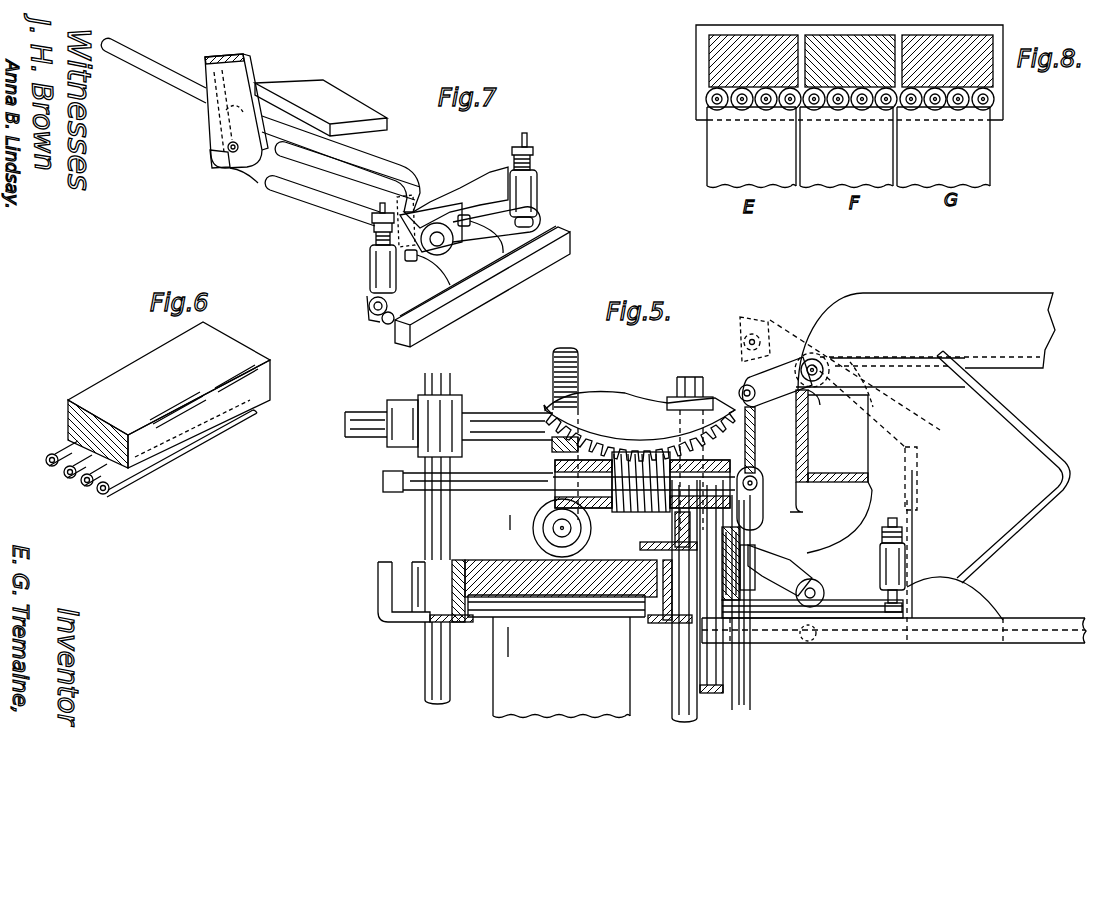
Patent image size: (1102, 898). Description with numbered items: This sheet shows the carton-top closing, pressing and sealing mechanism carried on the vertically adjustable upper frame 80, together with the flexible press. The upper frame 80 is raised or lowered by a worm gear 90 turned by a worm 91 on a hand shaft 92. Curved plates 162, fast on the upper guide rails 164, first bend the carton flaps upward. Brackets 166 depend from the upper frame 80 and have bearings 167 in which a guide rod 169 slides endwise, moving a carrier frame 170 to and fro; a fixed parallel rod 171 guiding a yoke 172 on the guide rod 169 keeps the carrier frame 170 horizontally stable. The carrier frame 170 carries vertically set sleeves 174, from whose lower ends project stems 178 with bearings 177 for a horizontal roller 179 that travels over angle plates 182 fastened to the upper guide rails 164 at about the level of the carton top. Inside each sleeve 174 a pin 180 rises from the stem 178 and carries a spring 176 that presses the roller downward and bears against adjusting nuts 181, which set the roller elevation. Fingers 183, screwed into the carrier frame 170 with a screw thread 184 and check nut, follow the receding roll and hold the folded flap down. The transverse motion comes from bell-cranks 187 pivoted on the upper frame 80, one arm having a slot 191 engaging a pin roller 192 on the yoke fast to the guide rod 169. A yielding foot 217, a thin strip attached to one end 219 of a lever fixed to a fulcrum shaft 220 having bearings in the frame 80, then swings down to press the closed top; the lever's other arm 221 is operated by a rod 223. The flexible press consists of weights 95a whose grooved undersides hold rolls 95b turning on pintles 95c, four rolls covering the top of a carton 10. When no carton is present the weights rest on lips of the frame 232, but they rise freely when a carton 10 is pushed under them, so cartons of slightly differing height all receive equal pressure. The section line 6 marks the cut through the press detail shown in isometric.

In FIG. 7, the bell-crank 187 is at (205, 80).
In FIG. 7, the bearings 167 is at (222, 128).
In FIG. 7, the slot 191 is at (230, 158).
In FIG. 7, the pin roller 192 is at (250, 172).
In FIG. 7, the yoke 172 is at (227, 165).
In FIG. 7, the bracket 166 is at (333, 98).
In FIG. 5, the bracket 166 is at (803, 558).
In FIG. 7, the fixed parallel rod 171 is at (290, 200).
In FIG. 7, the guide rod 169 is at (297, 195).
In FIG. 7, the carrier frame 170 is at (457, 200).
In FIG. 7, the sleeves 174 is at (528, 190).
In FIG. 5, the sleeves 174 is at (893, 567).
In FIG. 7, the screw thread 184 is at (468, 216).
In FIG. 7, the fingers 183 is at (537, 229).
In FIG. 7, the upper guide rails 164 is at (548, 260).
In FIG. 5, the upper guide rails 164 is at (894, 557).
In FIG. 7, the angle plates 182 is at (423, 300).
In FIG. 7, the stems 178 is at (367, 304).
In FIG. 5, the stems 178 is at (740, 590).
In FIG. 7, the bearings 177 is at (373, 330).
In FIG. 7, the roller 179 is at (383, 333).
In FIG. 5, the roller 179 is at (867, 608).
In FIG. 6, the weight 95a is at (169, 395).
In FIG. 8, the weight 95a is at (715, 63).
In FIG. 6, the rolls 95b is at (178, 453).
In FIG. 8, the rolls 95b is at (710, 100).
In FIG. 5, the rolls 95b is at (593, 617).
In FIG. 6, the pintles 95c is at (100, 495).
In FIG. 8, the pintles 95c is at (707, 107).
In FIG. 8, the carton 10 is at (848, 147).
In FIG. 5, the carton 10 is at (561, 667).
In FIG. 5, the worm gear 90 is at (639, 427).
In FIG. 5, the shaft 92 is at (407, 483).
In FIG. 5, the worm 91 is at (625, 513).
In FIG. 5, the section line 6 is at (503, 598).
In FIG. 5, the frame 232 is at (470, 622).
In FIG. 5, the upper frame 80 is at (926, 341).
In FIG. 5, the adjusting nuts 181 is at (787, 510).
In FIG. 5, the lever end 219 is at (912, 383).
In FIG. 5, the foot 217 is at (920, 502).
In FIG. 5, the lever arm 221 is at (770, 393).
In FIG. 5, the fulcrum shaft 220 is at (815, 368).
In FIG. 5, the rod 223 is at (752, 453).
In FIG. 5, the spring 176 is at (740, 540).
In FIG. 5, the pins 180 is at (800, 600).
In FIG. 5, the curved plates 162 is at (987, 600).